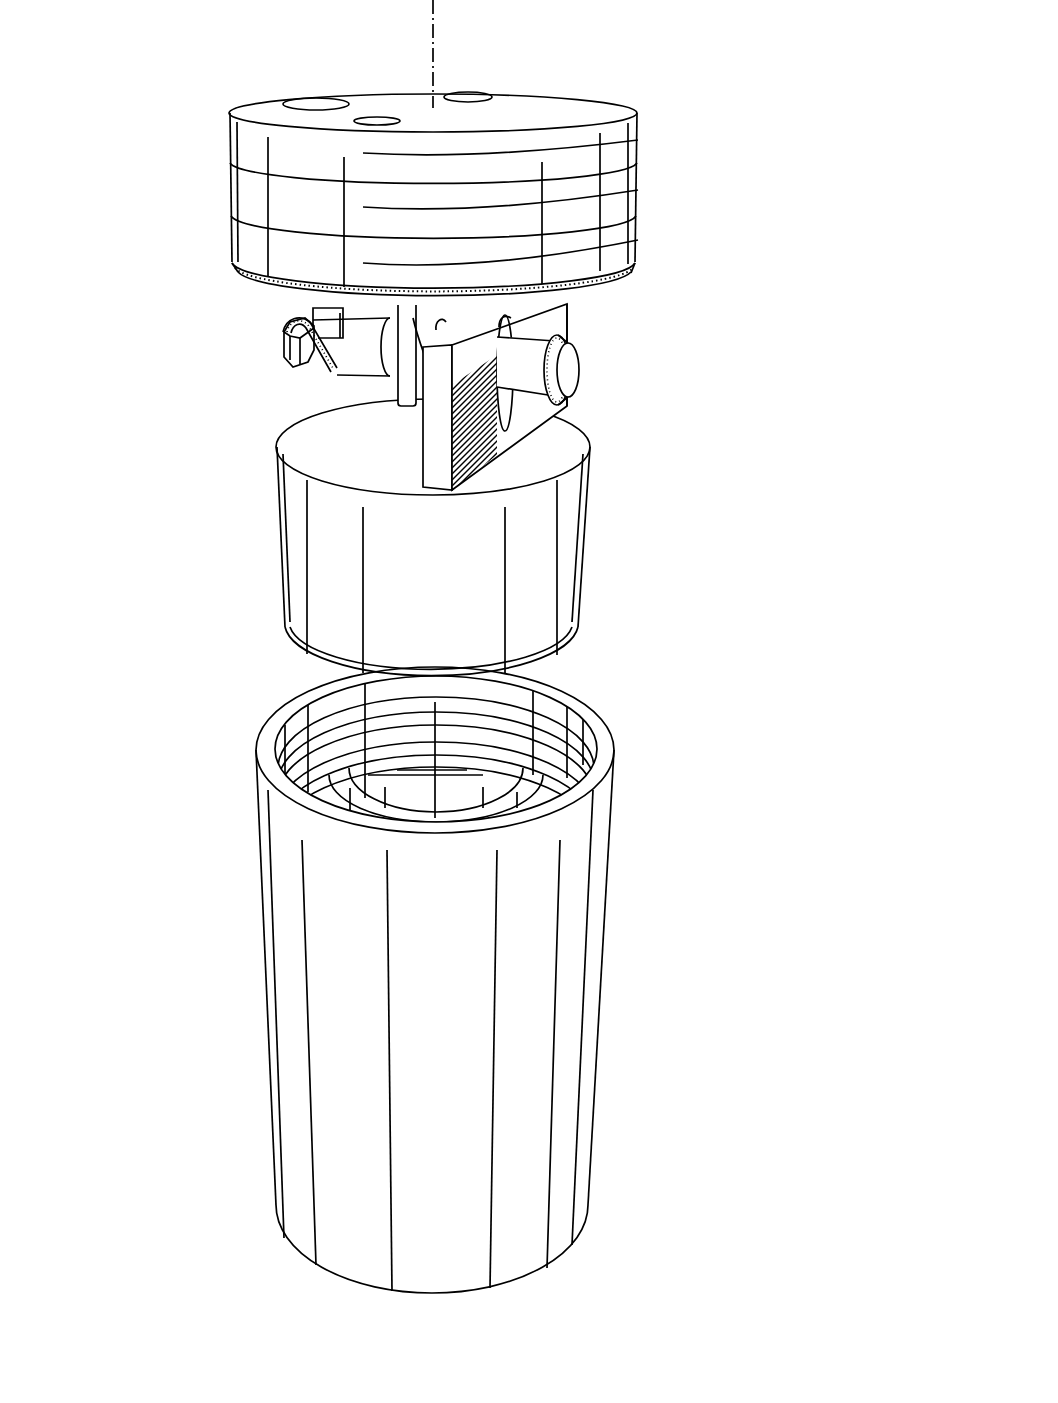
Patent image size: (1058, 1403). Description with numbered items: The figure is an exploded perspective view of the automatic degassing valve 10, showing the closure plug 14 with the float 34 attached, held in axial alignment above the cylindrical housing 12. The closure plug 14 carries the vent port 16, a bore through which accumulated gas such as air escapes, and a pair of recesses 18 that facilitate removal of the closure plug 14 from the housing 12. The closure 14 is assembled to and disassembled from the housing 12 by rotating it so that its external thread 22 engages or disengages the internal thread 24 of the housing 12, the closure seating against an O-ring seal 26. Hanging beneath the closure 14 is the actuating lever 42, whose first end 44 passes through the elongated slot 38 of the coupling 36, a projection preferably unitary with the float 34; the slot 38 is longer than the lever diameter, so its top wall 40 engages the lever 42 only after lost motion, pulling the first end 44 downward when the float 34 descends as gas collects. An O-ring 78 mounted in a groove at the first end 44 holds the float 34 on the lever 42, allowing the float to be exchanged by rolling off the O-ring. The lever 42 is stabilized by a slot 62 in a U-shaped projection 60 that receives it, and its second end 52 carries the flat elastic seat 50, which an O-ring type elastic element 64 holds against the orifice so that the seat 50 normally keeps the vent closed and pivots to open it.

The automatic degassing valve 10 is at (789, 456).
The housing 12 is at (575, 962).
The closure plug 14 is at (318, 217).
The vent port 16 is at (319, 99).
The recesses 18 is at (468, 95).
The external thread 22 is at (647, 176).
The internal thread 24 is at (538, 715).
The O-ring seal 26 is at (257, 281).
The float 34 is at (457, 593).
The coupling 36 is at (502, 450).
The slot 38 is at (508, 403).
The top wall 40 is at (503, 328).
The actuating lever 42 is at (362, 358).
The first end 44 is at (570, 370).
The elastic seat 50 is at (342, 340).
The second end 52 is at (287, 358).
The U-shaped projection 60 is at (402, 373).
The slot 62 is at (436, 330).
The O-ring type elastic element 64 is at (288, 320).
The O-ring 78 is at (562, 340).